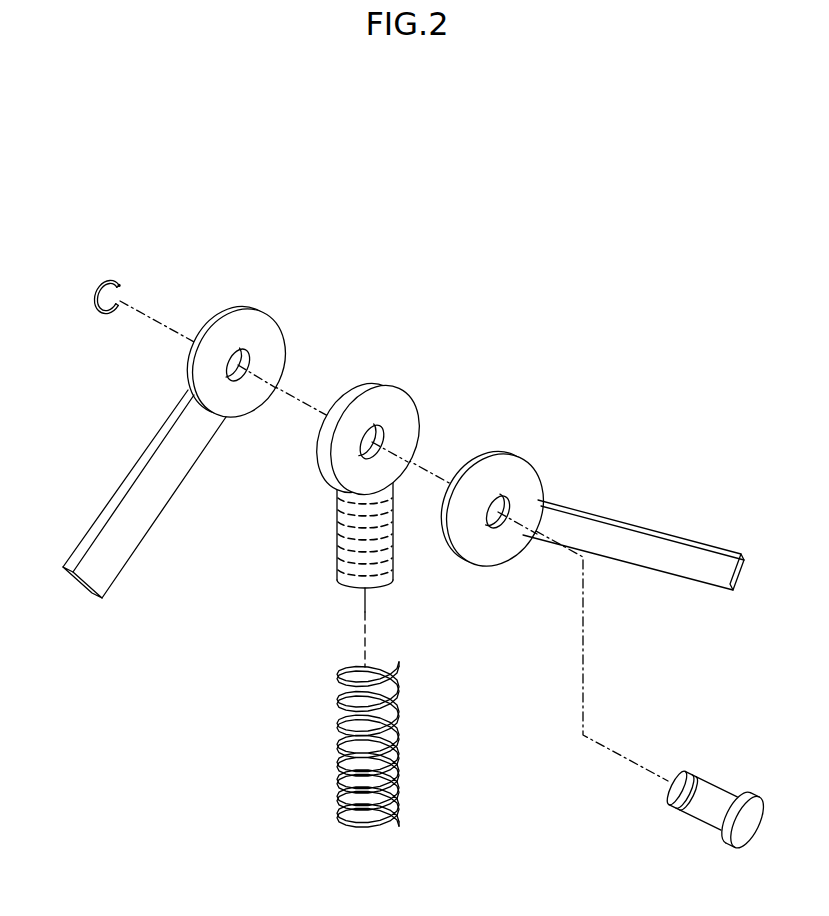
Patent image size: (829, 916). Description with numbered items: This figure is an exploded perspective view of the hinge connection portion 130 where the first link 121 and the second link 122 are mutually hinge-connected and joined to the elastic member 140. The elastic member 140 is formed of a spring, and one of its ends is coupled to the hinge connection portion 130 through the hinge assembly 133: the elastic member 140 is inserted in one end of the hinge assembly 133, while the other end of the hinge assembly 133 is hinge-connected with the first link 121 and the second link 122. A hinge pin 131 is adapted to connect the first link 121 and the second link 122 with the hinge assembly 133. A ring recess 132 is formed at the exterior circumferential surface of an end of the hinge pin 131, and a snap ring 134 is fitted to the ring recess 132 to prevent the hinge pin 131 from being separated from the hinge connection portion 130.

The first link 121 is at (158, 470).
The second link 122 is at (636, 538).
The hinge connection portion 130 is at (439, 297).
The hinge pin 131 is at (718, 838).
The ring recess 132 is at (686, 773).
The hinge assembly 133 is at (402, 410).
The snap ring 134 is at (112, 276).
The elastic member 140 is at (402, 739).